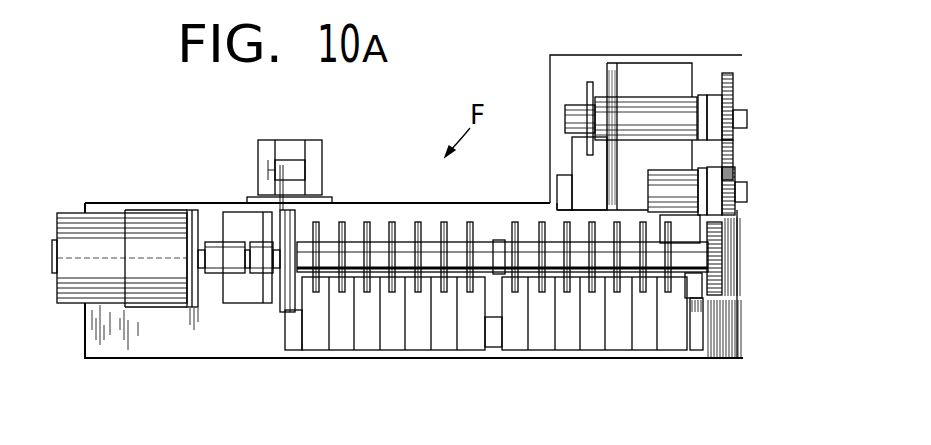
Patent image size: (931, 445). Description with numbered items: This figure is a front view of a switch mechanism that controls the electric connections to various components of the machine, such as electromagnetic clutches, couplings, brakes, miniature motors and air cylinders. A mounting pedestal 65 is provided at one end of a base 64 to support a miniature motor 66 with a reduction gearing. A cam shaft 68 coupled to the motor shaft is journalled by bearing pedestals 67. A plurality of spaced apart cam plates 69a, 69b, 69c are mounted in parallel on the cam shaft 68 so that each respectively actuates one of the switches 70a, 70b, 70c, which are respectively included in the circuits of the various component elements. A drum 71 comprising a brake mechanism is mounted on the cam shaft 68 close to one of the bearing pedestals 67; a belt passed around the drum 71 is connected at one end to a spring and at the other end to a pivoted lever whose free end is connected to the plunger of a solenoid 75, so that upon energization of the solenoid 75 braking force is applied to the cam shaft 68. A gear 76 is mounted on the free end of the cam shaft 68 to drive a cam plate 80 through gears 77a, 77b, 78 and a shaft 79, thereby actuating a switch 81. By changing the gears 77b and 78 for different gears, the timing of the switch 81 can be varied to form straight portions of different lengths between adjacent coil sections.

The base 64 is at (147, 348).
The mounting pedestal 65 is at (196, 210).
The miniature motor 66 is at (83, 212).
The bearing pedestal 67 is at (248, 298).
The cam shaft 68 is at (486, 250).
The cam plate 69a is at (316, 222).
The cam plate 69b is at (342, 222).
The cam plate 69c is at (367, 222).
The switch 70a is at (318, 342).
The switch 70b is at (345, 343).
The switch 70c is at (368, 343).
The drum 71 is at (282, 222).
The solenoid 75 is at (292, 143).
The gear 76 is at (734, 283).
The gear 77a is at (737, 216).
The gear 77b is at (737, 157).
The gear 78 is at (735, 86).
The shaft 79 is at (746, 118).
The cam plate 80 is at (590, 94).
The switch 81 is at (583, 170).